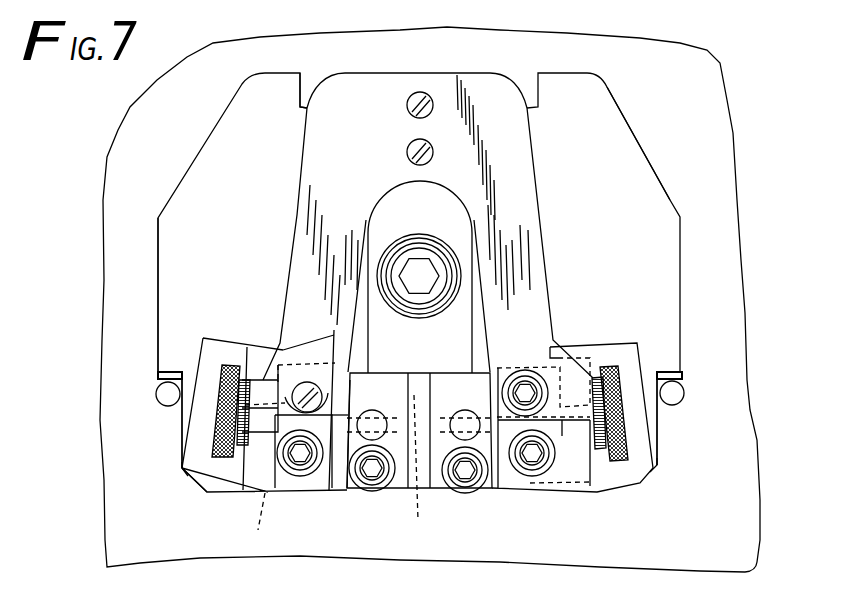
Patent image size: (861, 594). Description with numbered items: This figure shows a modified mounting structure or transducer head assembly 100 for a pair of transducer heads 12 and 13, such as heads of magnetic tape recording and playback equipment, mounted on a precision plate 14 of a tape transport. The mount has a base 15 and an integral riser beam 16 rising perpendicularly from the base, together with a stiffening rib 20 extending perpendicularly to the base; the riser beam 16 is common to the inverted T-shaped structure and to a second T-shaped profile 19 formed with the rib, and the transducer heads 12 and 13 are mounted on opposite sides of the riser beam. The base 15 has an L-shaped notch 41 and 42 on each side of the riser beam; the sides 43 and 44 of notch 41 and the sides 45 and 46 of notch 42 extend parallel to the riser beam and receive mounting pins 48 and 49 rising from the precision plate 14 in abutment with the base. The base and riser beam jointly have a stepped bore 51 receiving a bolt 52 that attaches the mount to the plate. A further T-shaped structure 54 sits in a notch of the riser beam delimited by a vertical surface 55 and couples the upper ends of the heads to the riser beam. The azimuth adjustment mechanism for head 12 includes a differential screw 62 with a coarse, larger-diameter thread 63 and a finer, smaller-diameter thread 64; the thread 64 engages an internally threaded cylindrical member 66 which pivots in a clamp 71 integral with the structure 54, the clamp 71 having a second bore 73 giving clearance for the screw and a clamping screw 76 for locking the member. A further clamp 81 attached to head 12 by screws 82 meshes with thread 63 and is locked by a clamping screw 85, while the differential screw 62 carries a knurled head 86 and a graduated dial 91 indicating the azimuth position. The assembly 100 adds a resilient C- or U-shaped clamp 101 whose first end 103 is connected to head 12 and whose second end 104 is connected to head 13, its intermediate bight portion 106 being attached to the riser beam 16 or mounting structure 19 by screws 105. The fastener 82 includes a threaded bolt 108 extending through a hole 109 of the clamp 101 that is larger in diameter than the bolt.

The transducer head 12 is at (238, 493).
The transducer head 13 is at (598, 493).
The precision plate 14 is at (757, 423).
The base 15 is at (163, 213).
The riser beam 16 is at (455, 225).
The second T-shaped profile 19 is at (528, 106).
The stiffening rib 20 is at (328, 62).
The L-shaped notch 41 is at (178, 418).
The L-shaped notch 42 is at (657, 440).
The side of notch 43 is at (182, 468).
The side of notch 45 is at (657, 462).
The side of notch 44 is at (157, 383).
The side of notch 46 is at (683, 383).
The mounting pin 48 is at (155, 400).
The mounting pin 49 is at (687, 398).
The stepped bore 51 is at (421, 240).
The bolt 52 is at (412, 250).
The further T-shaped structure 54 is at (353, 492).
The vertical surface 55 is at (421, 372).
The differential screw 62 is at (218, 370).
The thread 63 is at (330, 490).
The thread 64 is at (420, 470).
The cylindrical member 66 is at (376, 372).
The clamp 71 is at (440, 402).
The second bore 73 is at (383, 403).
The clamping screw 76 is at (377, 488).
The further clamp 81 is at (253, 524).
The screws 82 is at (275, 392).
The clamping screw 85 is at (300, 490).
The knurled head 86 is at (198, 487).
The dial 91 is at (255, 393).
The modified mounting structure 100 is at (682, 244).
The resilient clamp 101 is at (306, 217).
The end of resilient clamp 103 is at (263, 383).
The end of resilient clamp 104 is at (577, 378).
The screws 105 is at (412, 140).
The bight portion 106 is at (480, 90).
The threaded bolt 108 is at (314, 382).
The bore or hole 109 is at (310, 360).